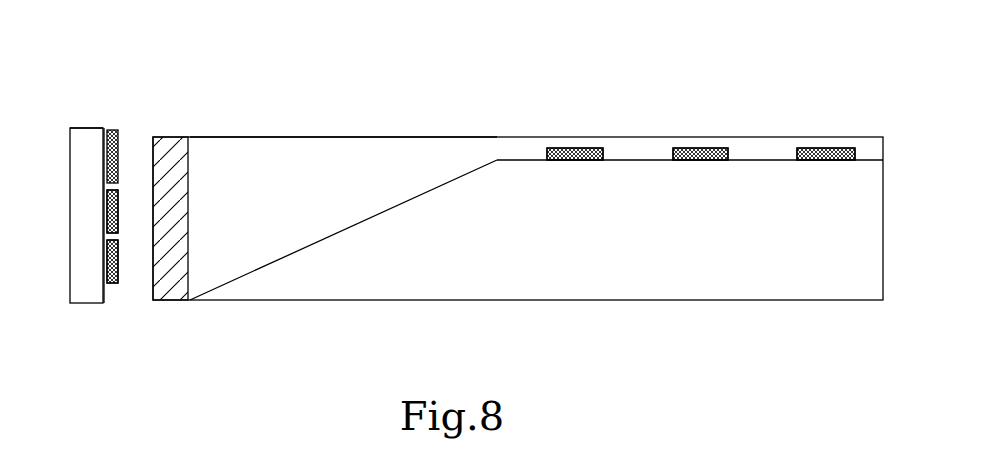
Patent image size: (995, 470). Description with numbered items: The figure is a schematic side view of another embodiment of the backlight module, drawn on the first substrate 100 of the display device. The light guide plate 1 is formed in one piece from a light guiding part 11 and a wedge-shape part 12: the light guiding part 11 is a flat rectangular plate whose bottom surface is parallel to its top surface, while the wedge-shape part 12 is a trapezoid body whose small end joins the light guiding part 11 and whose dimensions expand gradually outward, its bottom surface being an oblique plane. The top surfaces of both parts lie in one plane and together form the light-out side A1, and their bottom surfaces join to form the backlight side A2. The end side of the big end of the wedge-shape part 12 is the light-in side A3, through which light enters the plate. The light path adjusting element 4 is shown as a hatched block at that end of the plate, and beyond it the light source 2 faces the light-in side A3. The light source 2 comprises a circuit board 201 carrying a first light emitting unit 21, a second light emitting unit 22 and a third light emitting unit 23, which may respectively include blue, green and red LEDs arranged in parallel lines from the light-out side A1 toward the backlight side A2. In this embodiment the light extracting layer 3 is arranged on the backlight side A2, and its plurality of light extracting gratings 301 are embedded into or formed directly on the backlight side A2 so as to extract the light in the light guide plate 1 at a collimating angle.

The light guide plate 1 is at (363, 63).
The light guiding part 11 is at (542, 144).
The wedge-shape part 12 is at (350, 146).
The light source 2 is at (67, 117).
The circuit board 201 is at (89, 128).
The first light emitting unit 21 is at (115, 128).
The second light emitting unit 22 is at (104, 208).
The third light emitting unit 23 is at (118, 285).
The light extracting layer 3 is at (830, 65).
The light extracting grating 301 is at (588, 149).
The light path adjusting element 4 is at (177, 136).
The first substrate 100 is at (650, 297).
The light-out side A1 is at (265, 137).
The backlight side A2 is at (645, 161).
The light-in side A3 is at (189, 222).